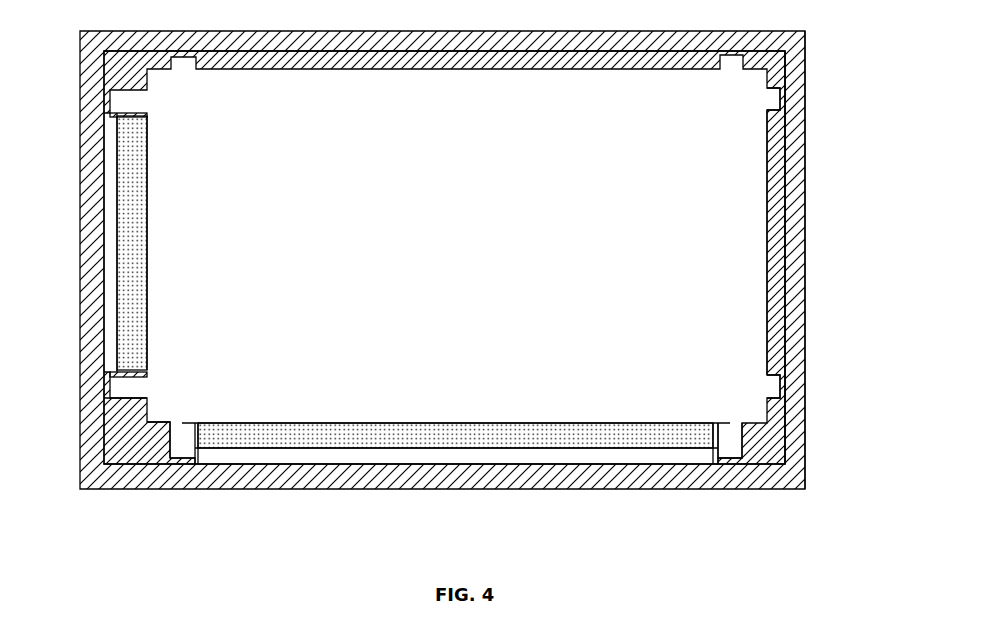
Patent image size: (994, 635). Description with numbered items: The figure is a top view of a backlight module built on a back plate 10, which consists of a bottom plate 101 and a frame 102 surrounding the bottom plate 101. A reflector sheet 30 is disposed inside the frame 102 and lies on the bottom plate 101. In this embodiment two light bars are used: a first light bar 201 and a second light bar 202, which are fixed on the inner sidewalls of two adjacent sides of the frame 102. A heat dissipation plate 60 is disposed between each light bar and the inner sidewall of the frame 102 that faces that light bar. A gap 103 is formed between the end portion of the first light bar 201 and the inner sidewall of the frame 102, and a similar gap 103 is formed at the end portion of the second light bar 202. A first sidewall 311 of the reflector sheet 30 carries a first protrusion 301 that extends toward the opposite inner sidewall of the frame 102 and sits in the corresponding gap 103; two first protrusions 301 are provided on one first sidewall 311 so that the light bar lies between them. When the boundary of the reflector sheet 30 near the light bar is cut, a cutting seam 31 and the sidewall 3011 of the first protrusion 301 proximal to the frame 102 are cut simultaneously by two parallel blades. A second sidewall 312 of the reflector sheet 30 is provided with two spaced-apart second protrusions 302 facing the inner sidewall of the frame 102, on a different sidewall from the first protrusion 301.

The back plate 10 is at (883, 243).
The bottom plate 101 is at (773, 285).
The frame 102 is at (799, 248).
The gap 103 is at (130, 418).
The reflector sheet 30 is at (718, 343).
The first protrusion 301 is at (733, 447).
The sidewall of the first protrusion 3011 is at (190, 456).
The second protrusion 302 is at (772, 96).
The cutting seam 31 is at (142, 382).
The first sidewall 311 is at (142, 195).
The second sidewall 312 is at (774, 183).
The heat dissipation plate 60 is at (112, 333).
The first light bar 201 is at (508, 440).
The second light bar 202 is at (127, 281).